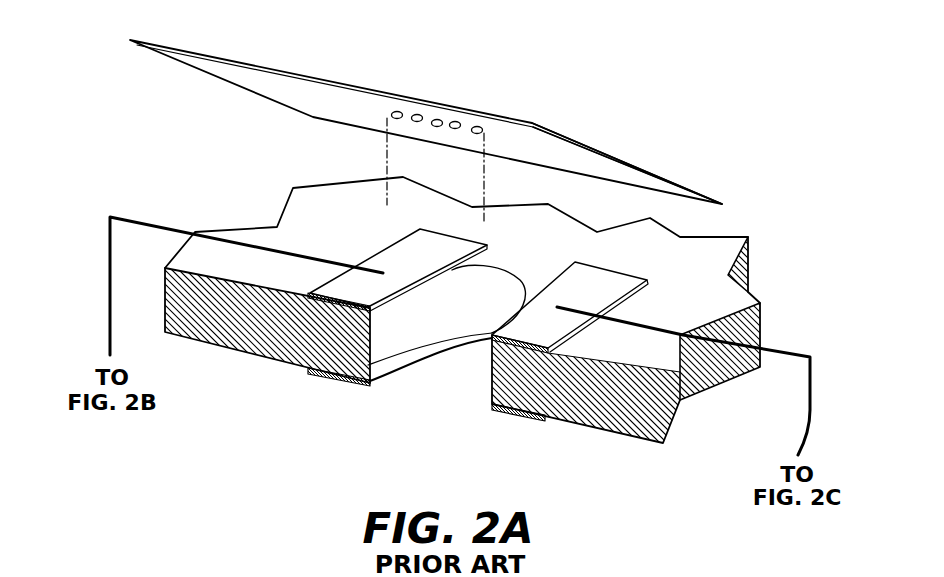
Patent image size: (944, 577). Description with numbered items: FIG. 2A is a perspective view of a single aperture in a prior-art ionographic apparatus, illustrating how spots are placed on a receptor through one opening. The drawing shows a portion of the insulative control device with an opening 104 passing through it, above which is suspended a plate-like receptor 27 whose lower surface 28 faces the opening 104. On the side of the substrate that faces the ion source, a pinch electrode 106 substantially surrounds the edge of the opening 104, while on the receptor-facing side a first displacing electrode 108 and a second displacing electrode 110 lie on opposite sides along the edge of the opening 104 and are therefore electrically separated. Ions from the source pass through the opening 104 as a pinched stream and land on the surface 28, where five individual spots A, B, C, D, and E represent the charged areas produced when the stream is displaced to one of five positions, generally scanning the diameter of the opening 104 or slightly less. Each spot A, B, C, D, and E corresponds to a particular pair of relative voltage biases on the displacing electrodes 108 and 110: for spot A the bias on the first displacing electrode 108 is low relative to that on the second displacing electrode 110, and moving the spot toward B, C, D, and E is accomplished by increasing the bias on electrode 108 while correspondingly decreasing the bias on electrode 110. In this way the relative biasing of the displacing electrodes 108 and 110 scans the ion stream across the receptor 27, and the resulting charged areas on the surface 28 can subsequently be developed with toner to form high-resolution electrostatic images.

The receptor 27 is at (573, 137).
The surface 28 is at (247, 78).
The opening 104 is at (422, 312).
The pinch electrode 106 is at (355, 378).
The first displacing electrode 108 is at (362, 285).
The second displacing electrode 110 is at (538, 318).
The spot A is at (390, 113).
The spot B is at (413, 117).
The spot C is at (437, 123).
The spot D is at (455, 125).
The spot E is at (477, 128).